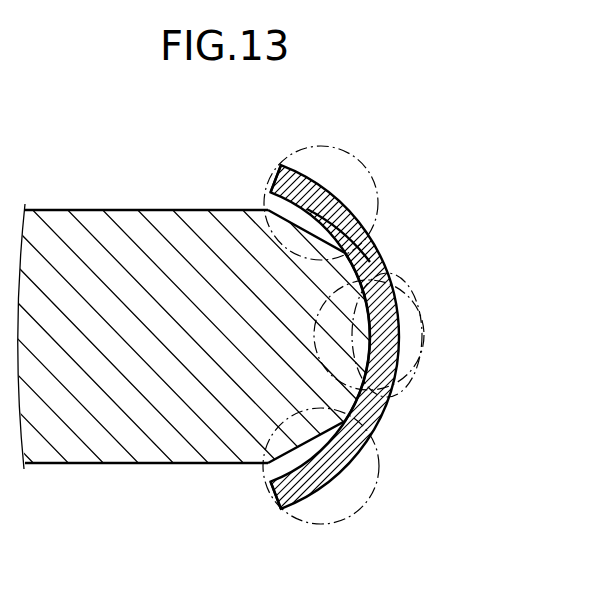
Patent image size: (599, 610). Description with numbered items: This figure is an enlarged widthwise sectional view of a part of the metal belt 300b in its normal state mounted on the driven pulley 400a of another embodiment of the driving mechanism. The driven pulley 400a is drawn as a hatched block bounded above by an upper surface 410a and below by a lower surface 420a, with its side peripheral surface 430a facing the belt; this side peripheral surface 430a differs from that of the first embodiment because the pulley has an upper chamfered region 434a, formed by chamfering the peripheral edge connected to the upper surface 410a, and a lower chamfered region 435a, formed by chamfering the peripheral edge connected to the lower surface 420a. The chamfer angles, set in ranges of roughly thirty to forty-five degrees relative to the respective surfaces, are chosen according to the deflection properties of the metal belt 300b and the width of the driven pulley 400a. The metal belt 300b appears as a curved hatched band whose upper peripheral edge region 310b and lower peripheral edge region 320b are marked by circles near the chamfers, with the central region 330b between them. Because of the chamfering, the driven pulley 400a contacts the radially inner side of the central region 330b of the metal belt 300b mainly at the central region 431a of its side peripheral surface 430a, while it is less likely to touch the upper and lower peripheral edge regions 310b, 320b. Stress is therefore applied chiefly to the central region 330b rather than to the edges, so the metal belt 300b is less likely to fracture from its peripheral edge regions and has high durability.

The metal belt in the normal state 300b is at (299, 338).
The upper peripheral edge region 310b is at (362, 178).
The lower peripheral edge region 320b is at (361, 479).
The central region 330b is at (424, 330).
The driven pulley 400a is at (170, 228).
The upper surface 410a is at (85, 209).
The lower surface 420a is at (115, 466).
The side peripheral surface 430a is at (378, 342).
The central region 431a is at (362, 255).
The upper chamfered region 434a is at (297, 216).
The lower chamfered region 435a is at (296, 455).